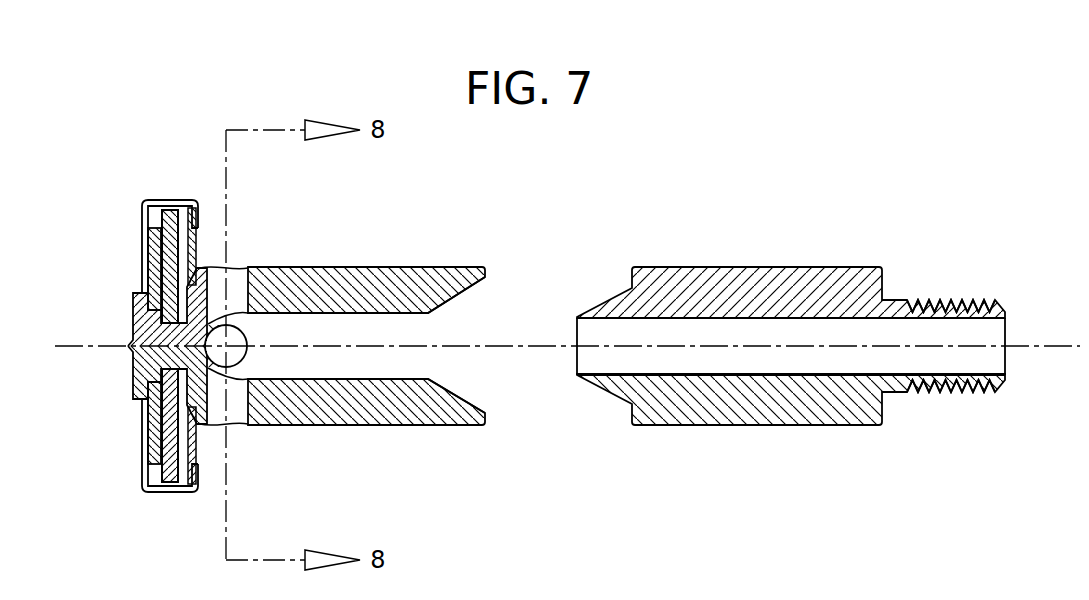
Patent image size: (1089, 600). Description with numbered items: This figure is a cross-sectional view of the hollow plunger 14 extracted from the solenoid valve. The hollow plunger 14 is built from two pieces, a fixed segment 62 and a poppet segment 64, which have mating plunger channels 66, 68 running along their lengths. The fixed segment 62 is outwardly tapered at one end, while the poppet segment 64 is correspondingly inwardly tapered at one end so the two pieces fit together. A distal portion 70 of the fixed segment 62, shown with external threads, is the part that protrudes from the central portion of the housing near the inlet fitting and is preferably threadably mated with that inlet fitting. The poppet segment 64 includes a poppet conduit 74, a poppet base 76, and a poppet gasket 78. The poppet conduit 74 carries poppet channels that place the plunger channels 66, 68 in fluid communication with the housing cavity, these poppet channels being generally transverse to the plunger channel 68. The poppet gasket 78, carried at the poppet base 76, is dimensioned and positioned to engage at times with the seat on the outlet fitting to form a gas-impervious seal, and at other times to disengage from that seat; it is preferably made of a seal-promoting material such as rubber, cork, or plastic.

The hollow plunger 14 is at (702, 157).
The fixed segment 62 is at (764, 263).
The poppet segment 64 is at (366, 265).
The plunger channel 66 is at (932, 333).
The plunger channel 68 is at (392, 332).
The distal portion 70 is at (950, 298).
The poppet conduit 74 is at (237, 285).
The poppet base 76 is at (200, 218).
The poppet gasket 78 is at (150, 252).